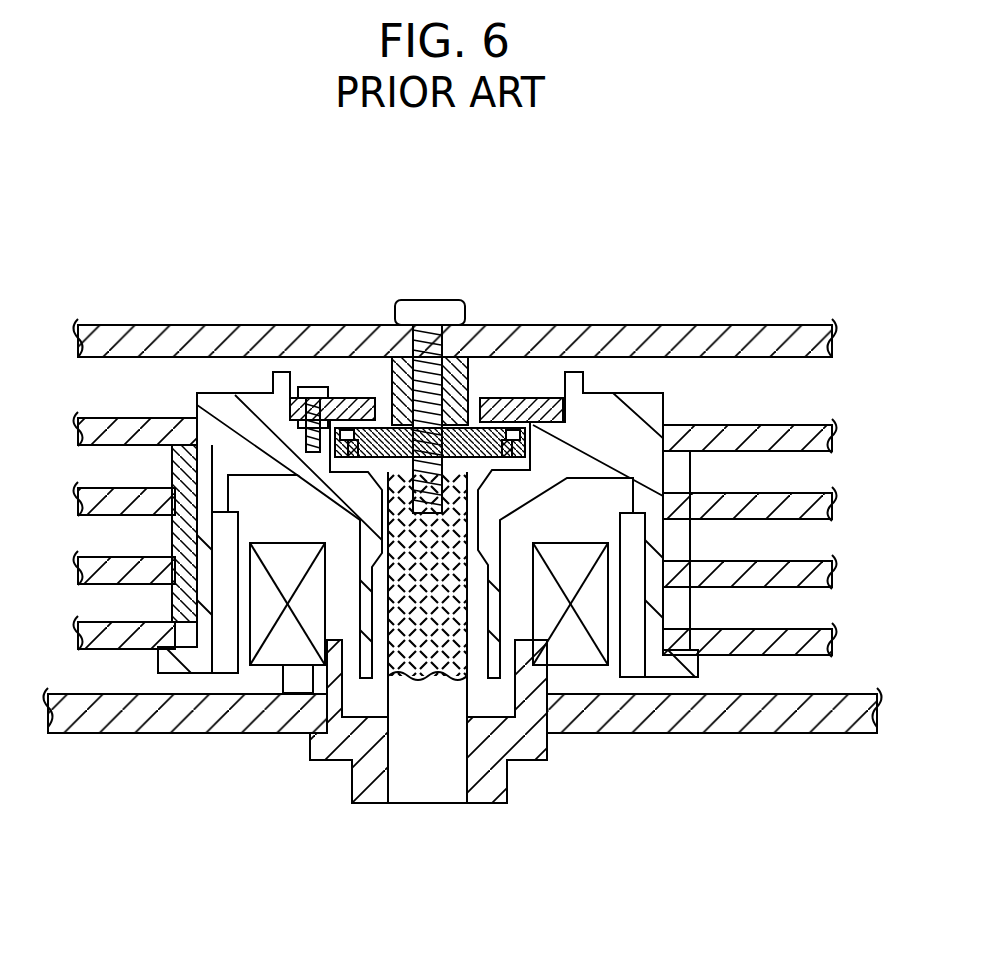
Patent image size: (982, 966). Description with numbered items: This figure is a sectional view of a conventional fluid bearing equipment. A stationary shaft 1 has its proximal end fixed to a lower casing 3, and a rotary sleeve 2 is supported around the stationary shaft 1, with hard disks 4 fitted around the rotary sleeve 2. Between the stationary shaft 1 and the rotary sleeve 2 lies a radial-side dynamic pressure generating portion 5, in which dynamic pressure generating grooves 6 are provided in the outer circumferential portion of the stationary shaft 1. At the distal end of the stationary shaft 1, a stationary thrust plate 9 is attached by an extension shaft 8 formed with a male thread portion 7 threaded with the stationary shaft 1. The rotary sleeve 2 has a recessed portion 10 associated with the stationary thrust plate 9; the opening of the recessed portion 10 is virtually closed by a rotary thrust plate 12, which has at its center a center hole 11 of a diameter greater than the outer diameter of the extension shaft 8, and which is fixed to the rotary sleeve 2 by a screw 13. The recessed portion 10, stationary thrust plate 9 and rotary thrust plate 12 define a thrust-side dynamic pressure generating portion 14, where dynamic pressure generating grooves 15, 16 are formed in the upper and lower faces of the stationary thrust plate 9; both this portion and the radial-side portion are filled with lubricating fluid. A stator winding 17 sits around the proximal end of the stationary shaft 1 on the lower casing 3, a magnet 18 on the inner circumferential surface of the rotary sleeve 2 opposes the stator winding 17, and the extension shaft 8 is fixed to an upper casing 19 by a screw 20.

The stationary shaft 1 is at (445, 795).
The rotary sleeve 2 is at (643, 403).
The lower casing 3 is at (495, 795).
The hard disks 4 is at (800, 424).
The radial-side dynamic pressure generating portion 5 is at (340, 690).
The dynamic pressure generating grooves 6 is at (405, 680).
The male thread portion 7 is at (390, 426).
The extension shaft 8 is at (452, 358).
The stationary thrust plate 9 is at (458, 427).
The recessed portion 10 is at (290, 413).
The center hole 11 is at (374, 428).
The rotary thrust plate 12 is at (545, 398).
The screw 13 is at (306, 386).
The thrust-side dynamic pressure generating portion 14 is at (350, 405).
The dynamic pressure generating grooves 15 is at (512, 428).
The dynamic pressure generating grooves 16 is at (487, 452).
The stator winding 17 is at (275, 665).
The magnet 18 is at (222, 673).
The upper casing 19 is at (748, 330).
The screw 20 is at (427, 308).